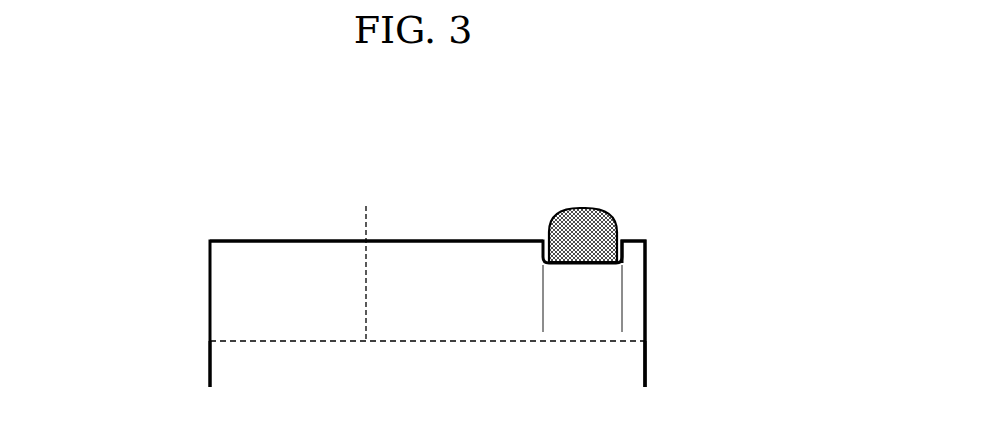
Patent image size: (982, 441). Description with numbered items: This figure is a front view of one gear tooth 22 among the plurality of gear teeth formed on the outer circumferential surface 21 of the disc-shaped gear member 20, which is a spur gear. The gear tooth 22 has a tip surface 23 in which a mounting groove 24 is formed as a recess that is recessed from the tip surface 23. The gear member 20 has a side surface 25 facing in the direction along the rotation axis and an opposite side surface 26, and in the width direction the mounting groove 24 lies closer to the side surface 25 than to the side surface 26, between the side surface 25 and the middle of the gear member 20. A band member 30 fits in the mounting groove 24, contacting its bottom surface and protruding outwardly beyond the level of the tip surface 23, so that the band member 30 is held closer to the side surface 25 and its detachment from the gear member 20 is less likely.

The gear member 20 is at (270, 222).
The outer circumferential surface 21 is at (365, 261).
The gear tooth 22 is at (647, 274).
The tip surface 23 is at (422, 240).
The mounting groove 24 is at (619, 297).
The side surface 25 is at (647, 363).
The side surface 26 is at (208, 362).
The band member 30 is at (590, 208).